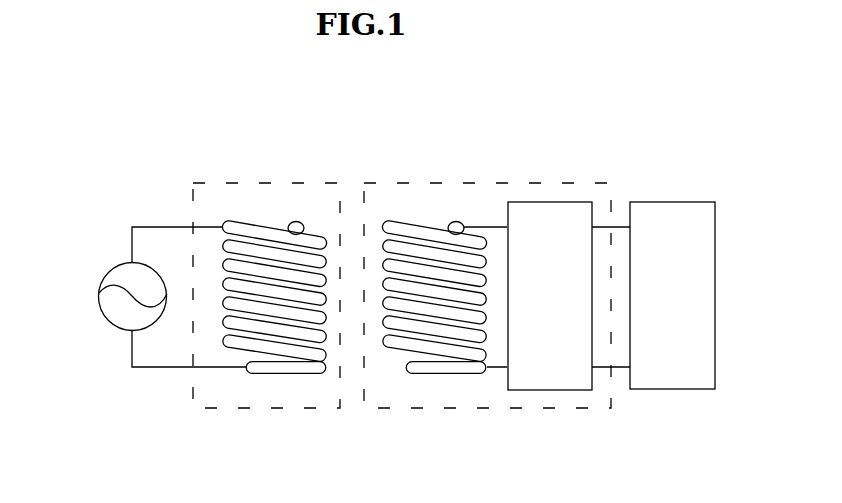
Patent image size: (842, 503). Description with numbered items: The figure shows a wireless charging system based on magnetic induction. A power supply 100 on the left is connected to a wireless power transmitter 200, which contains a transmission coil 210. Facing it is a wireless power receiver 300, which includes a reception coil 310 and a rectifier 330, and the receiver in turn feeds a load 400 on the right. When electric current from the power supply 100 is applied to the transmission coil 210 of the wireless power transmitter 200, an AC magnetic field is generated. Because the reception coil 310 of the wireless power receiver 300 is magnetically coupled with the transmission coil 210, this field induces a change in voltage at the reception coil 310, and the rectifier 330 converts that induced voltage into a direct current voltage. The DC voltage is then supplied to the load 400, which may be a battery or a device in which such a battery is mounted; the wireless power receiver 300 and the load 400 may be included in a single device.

The power supply 100 is at (105, 267).
The wireless power transmitter 200 is at (203, 181).
The transmission coil 210 is at (285, 220).
The wireless power receiver 300 is at (372, 181).
The reception coil 310 is at (435, 220).
The rectifier 330 is at (555, 201).
The load 400 is at (676, 201).